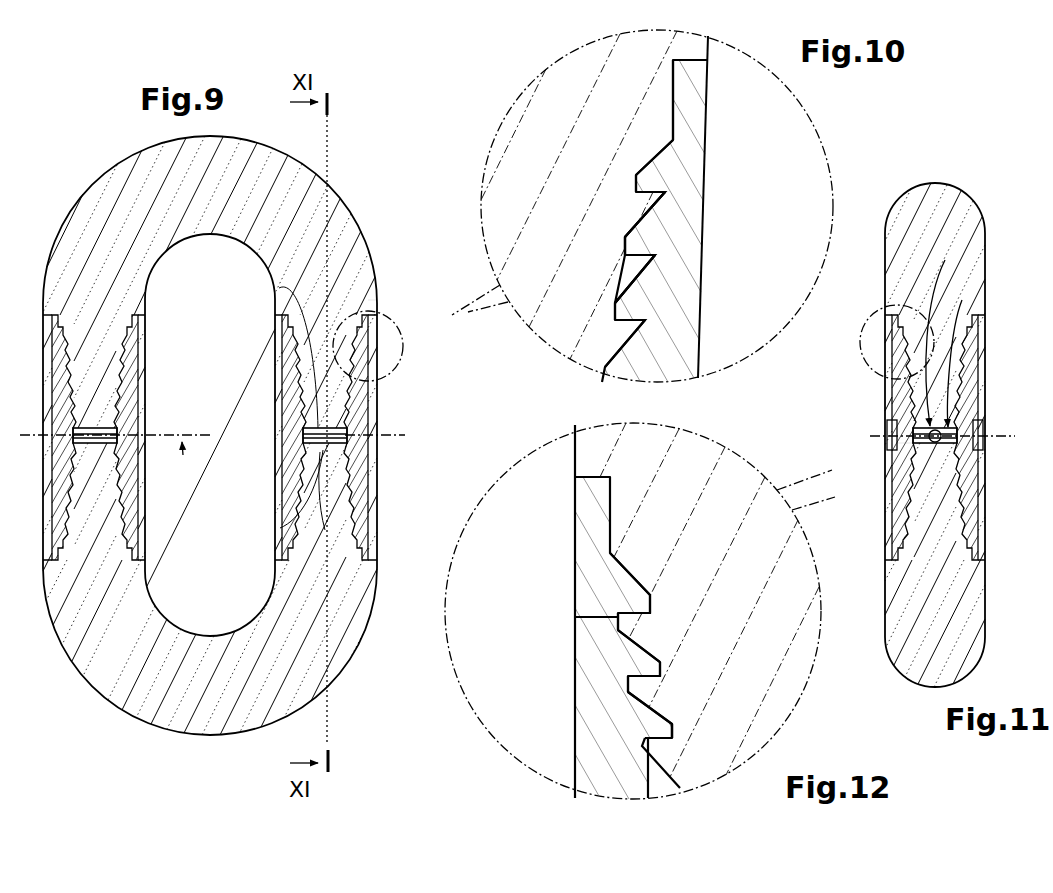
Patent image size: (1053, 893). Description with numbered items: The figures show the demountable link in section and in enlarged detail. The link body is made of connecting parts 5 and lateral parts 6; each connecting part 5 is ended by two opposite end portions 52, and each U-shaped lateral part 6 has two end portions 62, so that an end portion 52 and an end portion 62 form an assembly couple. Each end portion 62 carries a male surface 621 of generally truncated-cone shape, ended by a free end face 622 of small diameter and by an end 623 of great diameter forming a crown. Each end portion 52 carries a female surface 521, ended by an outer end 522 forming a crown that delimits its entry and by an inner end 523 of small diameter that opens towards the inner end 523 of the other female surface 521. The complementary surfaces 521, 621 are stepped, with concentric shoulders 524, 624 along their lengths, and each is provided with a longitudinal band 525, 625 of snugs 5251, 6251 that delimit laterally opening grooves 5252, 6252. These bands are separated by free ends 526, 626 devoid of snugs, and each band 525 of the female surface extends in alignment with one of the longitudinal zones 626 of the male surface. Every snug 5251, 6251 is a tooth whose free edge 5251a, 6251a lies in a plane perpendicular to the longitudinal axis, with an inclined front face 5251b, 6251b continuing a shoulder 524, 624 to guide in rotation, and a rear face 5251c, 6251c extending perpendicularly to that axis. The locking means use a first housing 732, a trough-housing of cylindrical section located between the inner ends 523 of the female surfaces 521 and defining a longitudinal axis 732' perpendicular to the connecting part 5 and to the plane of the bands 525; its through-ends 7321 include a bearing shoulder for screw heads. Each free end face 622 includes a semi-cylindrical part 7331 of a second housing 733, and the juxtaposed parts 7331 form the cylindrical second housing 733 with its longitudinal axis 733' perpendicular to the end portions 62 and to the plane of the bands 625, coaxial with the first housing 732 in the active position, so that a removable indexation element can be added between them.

In FIG. 9, the connecting part 5 is at (229, 377).
In FIG. 10, the connecting part 5 is at (616, 221).
In FIG. 12, the connecting part 5 is at (553, 614).
In FIG. 11, the connecting part 5 is at (915, 392).
In FIG. 9, the end portion 52 is at (250, 377).
In FIG. 10, the end portion 52 is at (616, 221).
In FIG. 12, the end portion 52 is at (553, 614).
In FIG. 11, the end portion 52 is at (915, 392).
In FIG. 9, the lateral part 6 is at (189, 445).
In FIG. 10, the lateral part 6 is at (552, 195).
In FIG. 12, the lateral part 6 is at (680, 620).
In FIG. 11, the lateral part 6 is at (964, 409).
In FIG. 9, the end portion 62 is at (110, 742).
In FIG. 10, the end portion 62 is at (526, 90).
In FIG. 12, the end portion 62 is at (785, 640).
In FIG. 11, the end portion 62 is at (955, 435).
In FIG. 9, the outer end 522 is at (399, 247).
In FIG. 9, the end 623 is at (399, 247).
In FIG. 9, the part of second housing 7331 is at (279, 288).
In FIG. 11, the part of second housing 7331 is at (945, 260).
In FIG. 9, the inner end 523 is at (361, 443).
In FIG. 11, the inner end 523 is at (900, 447).
In FIG. 9, the second housing 733 is at (260, 437).
In FIG. 11, the second housing 733 is at (897, 493).
In FIG. 9, the longitudinal axis 733' is at (210, 478).
In FIG. 11, the longitudinal axis 733' is at (897, 493).
In FIG. 9, the free end face 622 is at (325, 530).
In FIG. 11, the free end face 622 is at (962, 300).
In FIG. 10, the shoulder 524 is at (660, 138).
In FIG. 12, the shoulder 524 is at (622, 623).
In FIG. 10, the rear face 5251c is at (653, 181).
In FIG. 10, the shoulder 624 is at (627, 225).
In FIG. 10, the snug 5251 is at (608, 266).
In FIG. 10, the free edge 5251a is at (629, 306).
In FIG. 10, the front face 5251b is at (659, 222).
In FIG. 10, the female surface 521 is at (719, 277).
In FIG. 12, the female surface 521 is at (553, 763).
In FIG. 10, the longitudinal band 525 is at (648, 285).
In FIG. 10, the male surface 621 is at (559, 317).
In FIG. 10, the free end 626 is at (610, 274).
In FIG. 10, the groove 5252 is at (611, 339).
In FIG. 12, the snug 6251 is at (680, 626).
In FIG. 12, the free edge 6251a is at (626, 674).
In FIG. 12, the front face 6251b is at (647, 637).
In FIG. 12, the rear face 6251c is at (656, 680).
In FIG. 12, the groove 6252 is at (643, 659).
In FIG. 12, the longitudinal band 625 is at (662, 787).
In FIG. 12, the free end 526 is at (637, 733).
In FIG. 11, the through-end 7321 is at (878, 422).
In FIG. 11, the first housing 732 is at (991, 440).
In FIG. 11, the longitudinal axis 732' is at (1024, 464).